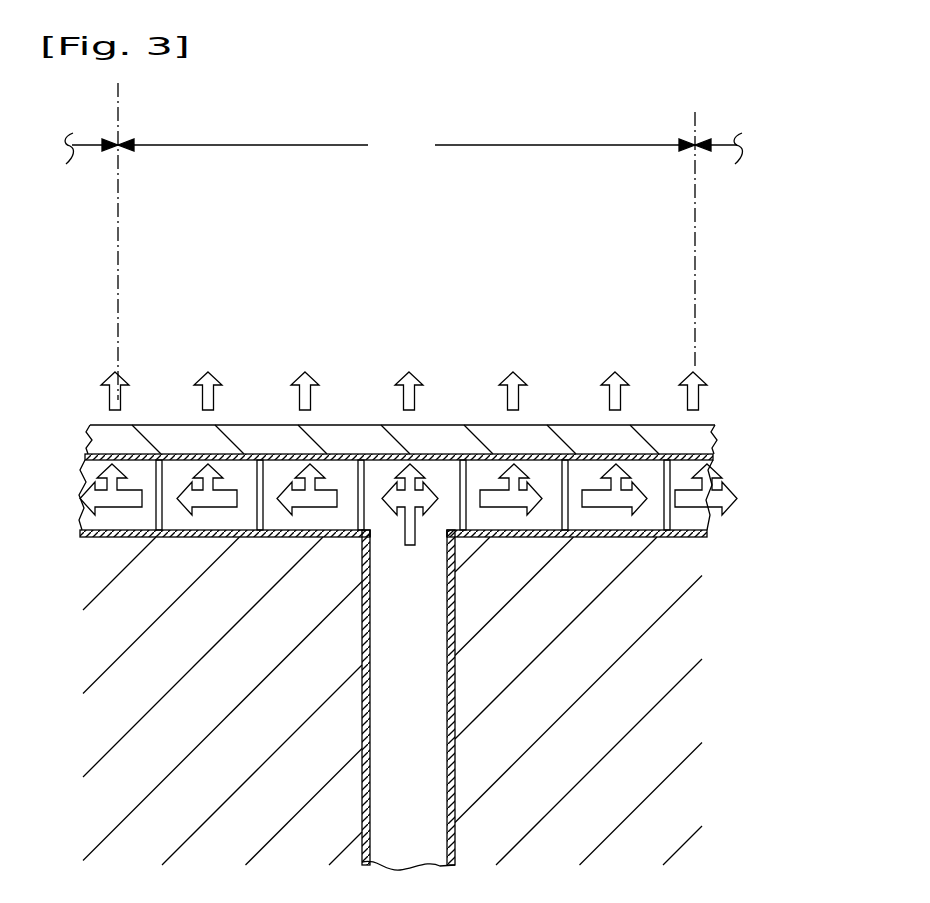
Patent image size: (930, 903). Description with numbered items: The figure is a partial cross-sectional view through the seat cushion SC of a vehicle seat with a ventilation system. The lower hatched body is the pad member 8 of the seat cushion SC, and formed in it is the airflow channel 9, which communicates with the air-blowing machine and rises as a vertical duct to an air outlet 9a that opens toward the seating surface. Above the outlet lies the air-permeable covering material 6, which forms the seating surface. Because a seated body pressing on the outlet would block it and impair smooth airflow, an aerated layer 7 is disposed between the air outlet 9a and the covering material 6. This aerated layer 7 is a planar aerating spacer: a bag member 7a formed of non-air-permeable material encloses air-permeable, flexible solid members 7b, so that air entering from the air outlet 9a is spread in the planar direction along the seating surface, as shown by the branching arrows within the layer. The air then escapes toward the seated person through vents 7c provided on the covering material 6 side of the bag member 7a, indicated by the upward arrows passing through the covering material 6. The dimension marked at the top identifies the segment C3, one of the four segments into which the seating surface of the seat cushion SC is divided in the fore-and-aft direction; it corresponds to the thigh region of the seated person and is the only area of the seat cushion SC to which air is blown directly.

The covering material 6 is at (690, 448).
The aerated layer 7 is at (700, 515).
The bag member 7a is at (672, 537).
The flexible solid member 7b is at (160, 537).
The vent 7c is at (290, 455).
The pad member 8 is at (660, 767).
The airflow channel 9 is at (422, 723).
The air outlet 9a is at (388, 537).
The seat cushion SC is at (362, 397).
The segment C3 is at (403, 241).